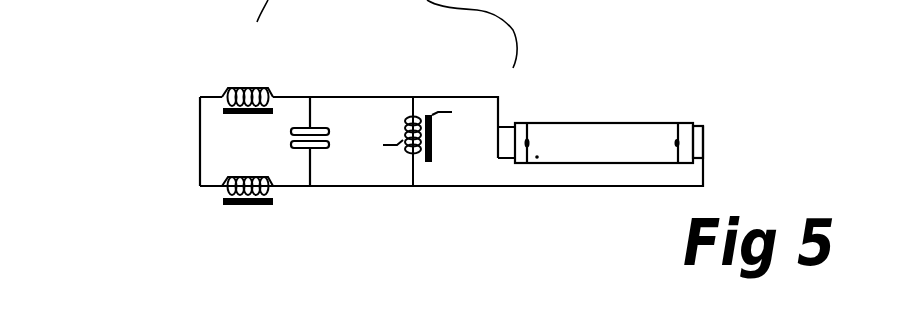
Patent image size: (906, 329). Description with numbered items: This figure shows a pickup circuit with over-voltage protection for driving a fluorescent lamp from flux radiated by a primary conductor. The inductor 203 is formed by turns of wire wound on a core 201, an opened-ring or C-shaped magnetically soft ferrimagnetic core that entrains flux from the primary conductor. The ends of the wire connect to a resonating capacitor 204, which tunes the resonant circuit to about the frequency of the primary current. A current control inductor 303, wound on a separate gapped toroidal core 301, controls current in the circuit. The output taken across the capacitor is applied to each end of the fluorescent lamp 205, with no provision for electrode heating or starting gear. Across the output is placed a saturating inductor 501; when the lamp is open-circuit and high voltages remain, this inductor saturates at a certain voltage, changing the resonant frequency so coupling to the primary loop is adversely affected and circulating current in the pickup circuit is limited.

The core 201 is at (233, 110).
The inductor 203 is at (240, 85).
The resonating capacitor 204 is at (328, 145).
The fluorescent lamp 205 is at (609, 106).
The core 301 is at (223, 207).
The current control inductor 303 is at (245, 177).
The saturating inductor 501 is at (432, 145).